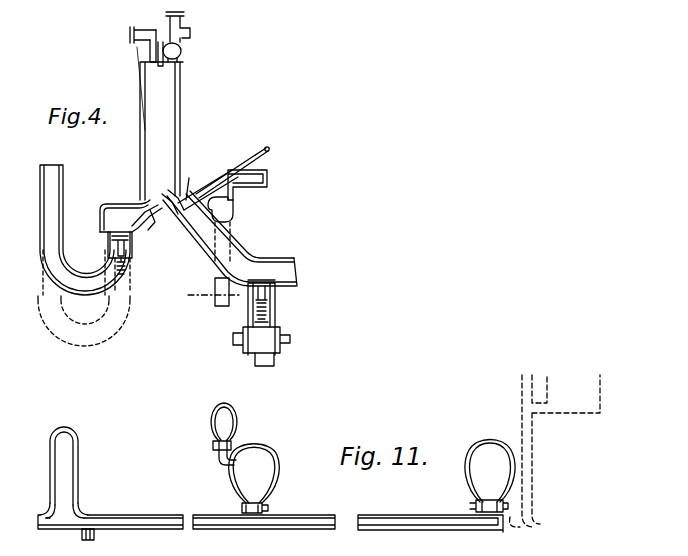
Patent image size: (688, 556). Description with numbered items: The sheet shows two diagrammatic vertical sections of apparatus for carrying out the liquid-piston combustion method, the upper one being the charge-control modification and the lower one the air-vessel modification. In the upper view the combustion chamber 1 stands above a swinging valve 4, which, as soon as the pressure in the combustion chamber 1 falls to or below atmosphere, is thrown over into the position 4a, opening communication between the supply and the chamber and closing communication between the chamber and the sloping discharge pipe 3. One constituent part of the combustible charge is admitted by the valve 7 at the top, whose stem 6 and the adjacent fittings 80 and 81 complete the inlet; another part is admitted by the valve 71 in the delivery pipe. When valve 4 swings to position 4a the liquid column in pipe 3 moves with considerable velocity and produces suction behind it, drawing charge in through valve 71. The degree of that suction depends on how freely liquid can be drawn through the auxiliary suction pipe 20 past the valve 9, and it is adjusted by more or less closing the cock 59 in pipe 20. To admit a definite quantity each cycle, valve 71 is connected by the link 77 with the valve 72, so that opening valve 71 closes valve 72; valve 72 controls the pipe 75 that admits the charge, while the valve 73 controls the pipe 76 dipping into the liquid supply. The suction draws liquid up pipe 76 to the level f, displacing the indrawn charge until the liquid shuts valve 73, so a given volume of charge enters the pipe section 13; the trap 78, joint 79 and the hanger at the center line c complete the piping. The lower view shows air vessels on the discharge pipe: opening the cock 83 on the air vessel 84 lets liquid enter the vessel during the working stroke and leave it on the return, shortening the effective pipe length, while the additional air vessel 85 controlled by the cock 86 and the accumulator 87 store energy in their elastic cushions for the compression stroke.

In FIG. 4, the combustion chamber 1 is at (160, 123).
In FIG. 11, the combustion chamber 1 is at (75, 470).
In FIG. 4, the discharge pipe 3 is at (230, 238).
In FIG. 4, the valve 4 is at (140, 205).
In FIG. 4, the valve position 4a is at (174, 203).
In FIG. 4, the valve stem 6 is at (156, 67).
In FIG. 4, the valve 7 is at (178, 51).
In FIG. 4, the valve 9 is at (268, 262).
In FIG. 4, the pipe section 13 is at (280, 274).
In FIG. 4, the auxiliary suction pipe 20 is at (268, 360).
In FIG. 4, the cock 59 is at (262, 338).
In FIG. 4, the valve 71 is at (187, 196).
In FIG. 4, the valve 72 is at (257, 185).
In FIG. 4, the valve 73 is at (229, 220).
In FIG. 4, the pipe 75 is at (270, 158).
In FIG. 4, the pipe 76 is at (221, 273).
In FIG. 4, the link 77 is at (243, 158).
In FIG. 4, the U-trap 78 is at (106, 223).
In FIG. 4, the joint 79 is at (163, 224).
In FIG. 4, the valve pipe 80 is at (143, 47).
In FIG. 4, the flange 81 is at (131, 28).
In FIG. 11, the cock 83 is at (265, 507).
In FIG. 11, the air vessel 84 is at (254, 473).
In FIG. 11, the additional air vessel 85 is at (231, 410).
In FIG. 11, the cock 86 is at (213, 448).
In FIG. 11, the air vessel or accumulator 87 is at (490, 476).
In FIG. 4, the center line c is at (209, 299).
In FIG. 4, the liquid level f is at (233, 210).